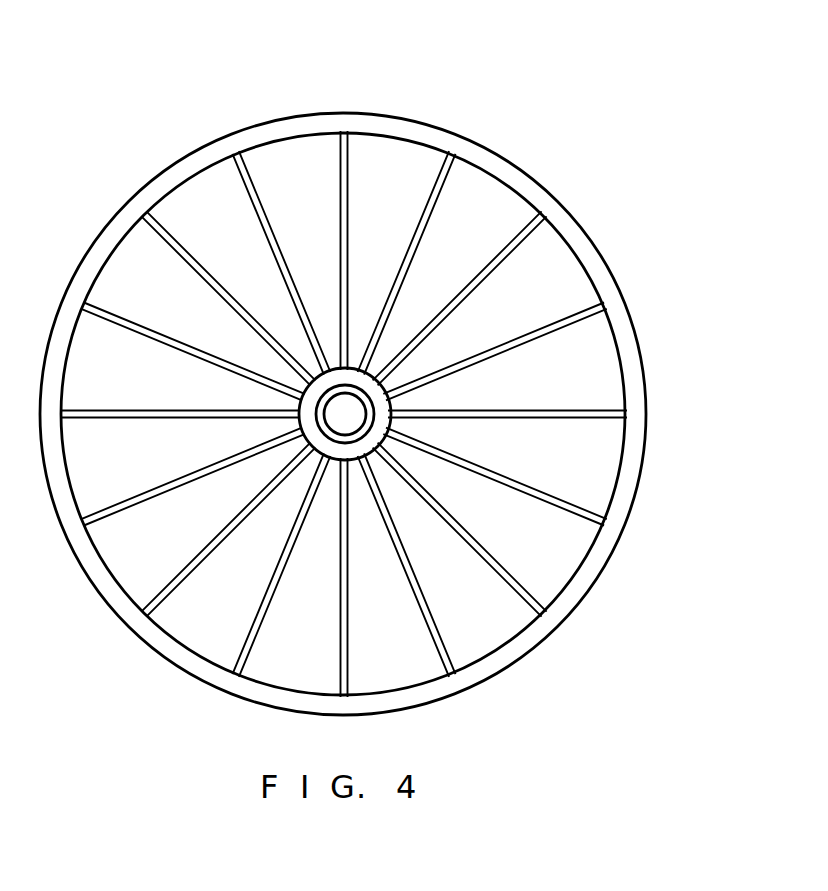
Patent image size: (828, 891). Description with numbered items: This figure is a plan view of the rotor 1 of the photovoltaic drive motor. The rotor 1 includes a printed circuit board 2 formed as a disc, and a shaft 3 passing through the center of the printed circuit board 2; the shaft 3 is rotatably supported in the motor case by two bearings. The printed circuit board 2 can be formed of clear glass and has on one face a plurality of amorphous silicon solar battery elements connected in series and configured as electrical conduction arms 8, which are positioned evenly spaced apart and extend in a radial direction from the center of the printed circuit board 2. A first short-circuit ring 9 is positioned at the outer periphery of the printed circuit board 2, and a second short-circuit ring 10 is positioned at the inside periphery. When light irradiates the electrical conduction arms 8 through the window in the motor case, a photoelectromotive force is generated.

The rotor 1 is at (376, 374).
The printed circuit board 2 is at (307, 155).
The shaft 3 is at (354, 418).
The electrical conduction arms 8 is at (429, 190).
The first short-circuit ring 9 is at (598, 258).
The second short-circuit ring 10 is at (390, 393).